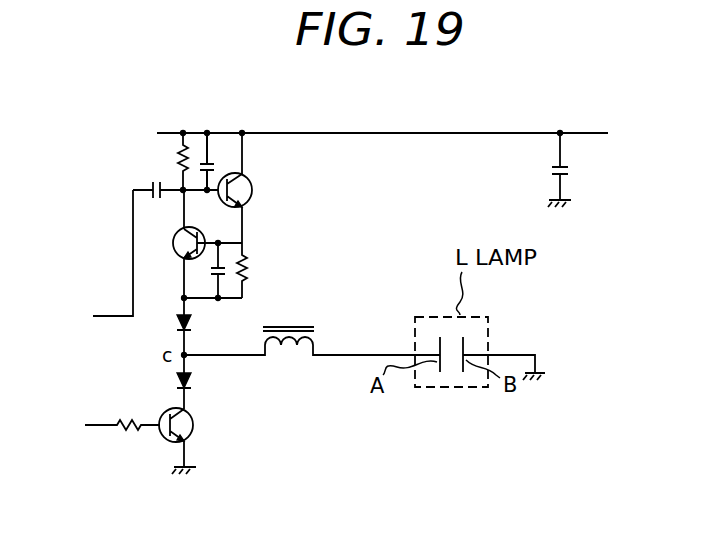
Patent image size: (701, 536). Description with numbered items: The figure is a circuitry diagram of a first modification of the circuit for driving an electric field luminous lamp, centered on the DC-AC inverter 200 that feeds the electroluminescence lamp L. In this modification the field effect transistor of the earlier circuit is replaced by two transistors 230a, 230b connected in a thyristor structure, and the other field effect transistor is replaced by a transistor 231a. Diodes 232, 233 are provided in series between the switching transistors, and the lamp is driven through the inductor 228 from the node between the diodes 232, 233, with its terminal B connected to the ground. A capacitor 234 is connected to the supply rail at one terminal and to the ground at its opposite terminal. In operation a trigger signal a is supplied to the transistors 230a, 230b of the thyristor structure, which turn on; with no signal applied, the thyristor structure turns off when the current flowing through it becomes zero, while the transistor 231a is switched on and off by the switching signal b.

The DC-AC inverter 200 is at (280, 158).
The transistor 230a is at (251, 193).
The transistor 230b is at (175, 248).
The diode 232 is at (207, 332).
The diode 233 is at (207, 382).
The transistor 231a is at (193, 432).
The inductor 228 is at (293, 350).
The capacitor 234 is at (582, 169).